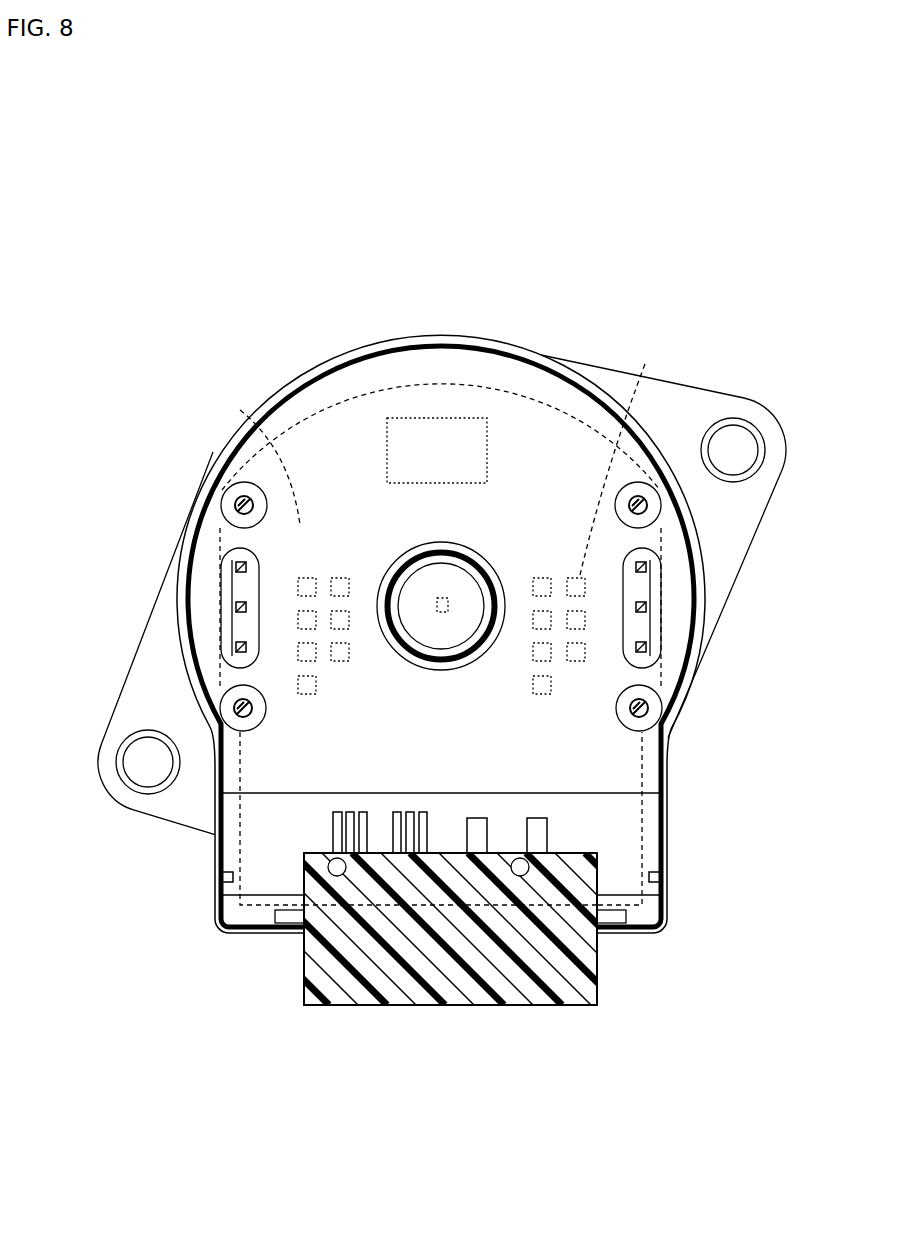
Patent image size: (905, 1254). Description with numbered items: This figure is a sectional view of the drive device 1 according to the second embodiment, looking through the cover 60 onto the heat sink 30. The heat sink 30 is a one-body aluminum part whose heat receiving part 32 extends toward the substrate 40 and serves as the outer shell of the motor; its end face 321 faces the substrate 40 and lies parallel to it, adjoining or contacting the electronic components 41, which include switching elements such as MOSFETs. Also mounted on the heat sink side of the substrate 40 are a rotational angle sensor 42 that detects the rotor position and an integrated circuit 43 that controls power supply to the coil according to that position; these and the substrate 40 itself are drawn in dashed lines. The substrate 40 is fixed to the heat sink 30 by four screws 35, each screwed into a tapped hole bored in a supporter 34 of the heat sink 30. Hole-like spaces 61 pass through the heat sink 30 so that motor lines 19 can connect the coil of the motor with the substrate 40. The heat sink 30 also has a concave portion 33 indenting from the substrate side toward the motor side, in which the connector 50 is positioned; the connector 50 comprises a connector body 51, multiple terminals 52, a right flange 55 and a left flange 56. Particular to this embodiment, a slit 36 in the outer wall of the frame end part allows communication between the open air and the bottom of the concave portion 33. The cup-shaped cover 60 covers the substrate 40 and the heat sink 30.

The drive device 1 is at (631, 258).
The motor line 19 is at (236, 567).
The heat sink 30 is at (365, 621).
The heat receiving part 32 is at (337, 518).
The concave portion 33 is at (285, 808).
The end face 321 is at (385, 720).
The supporter 34 is at (226, 492).
The screw 35 is at (236, 507).
The slit 36 is at (222, 877).
The substrate 40 is at (372, 387).
The electronic components 41 is at (436, 456).
The rotational angle sensor 42 is at (450, 603).
The integrated circuit 43 is at (427, 418).
The connector 50 is at (451, 947).
The connector body 51 is at (304, 975).
The terminals 52 is at (323, 827).
The right flange 55 is at (632, 930).
The left flange 56 is at (258, 927).
The cover 60 is at (230, 445).
The space 61 is at (240, 553).